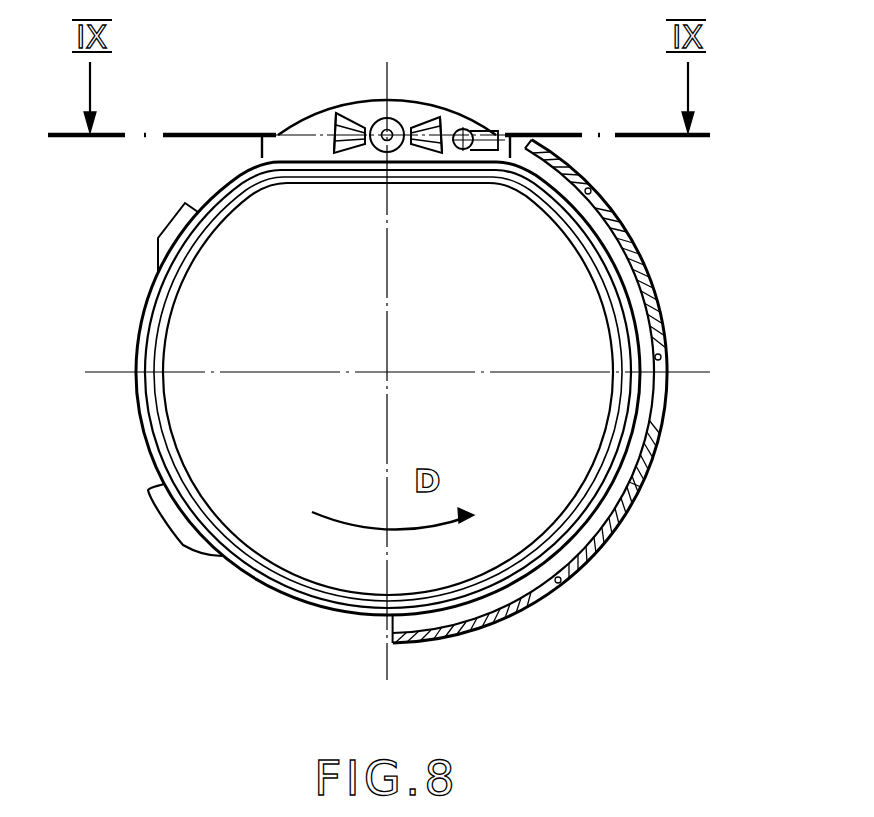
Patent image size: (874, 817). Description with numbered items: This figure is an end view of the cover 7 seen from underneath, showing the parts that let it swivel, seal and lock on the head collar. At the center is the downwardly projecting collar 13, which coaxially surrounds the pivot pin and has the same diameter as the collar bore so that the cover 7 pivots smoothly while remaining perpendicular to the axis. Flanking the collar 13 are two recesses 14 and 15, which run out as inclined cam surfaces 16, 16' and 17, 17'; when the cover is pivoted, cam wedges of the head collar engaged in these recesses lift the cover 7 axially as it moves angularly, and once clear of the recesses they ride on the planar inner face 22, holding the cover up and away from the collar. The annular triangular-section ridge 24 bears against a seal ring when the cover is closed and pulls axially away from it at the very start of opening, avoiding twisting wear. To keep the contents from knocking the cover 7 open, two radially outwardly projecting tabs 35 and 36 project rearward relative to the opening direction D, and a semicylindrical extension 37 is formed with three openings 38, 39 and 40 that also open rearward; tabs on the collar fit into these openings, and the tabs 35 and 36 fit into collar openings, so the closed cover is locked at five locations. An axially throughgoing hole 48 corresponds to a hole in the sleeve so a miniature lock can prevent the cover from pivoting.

The cover 7 is at (212, 312).
The collar 13 is at (393, 122).
The recess 14 is at (338, 122).
The recess 15 is at (440, 114).
The inclined cam surface 16 is at (346, 113).
The inclined cam surface 16' is at (309, 78).
The inclined cam surface 17 is at (498, 101).
The inclined cam surface 17' is at (452, 88).
The planar inner face 22 is at (362, 110).
The annular triangular-section ridge 24 is at (152, 402).
The tab 35 is at (170, 226).
The tab 36 is at (168, 512).
The semicylindrical extension 37 is at (645, 487).
The opening 38 is at (592, 190).
The opening 39 is at (658, 357).
The opening 40 is at (560, 580).
The hole 48 is at (505, 135).